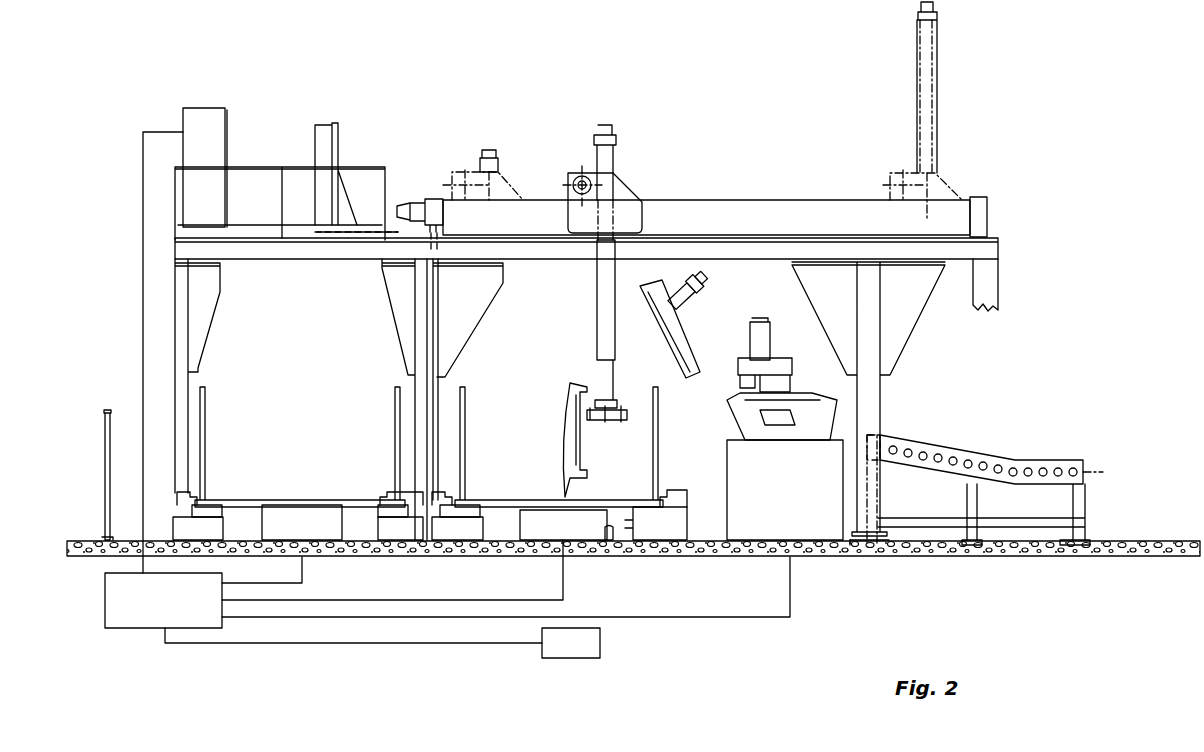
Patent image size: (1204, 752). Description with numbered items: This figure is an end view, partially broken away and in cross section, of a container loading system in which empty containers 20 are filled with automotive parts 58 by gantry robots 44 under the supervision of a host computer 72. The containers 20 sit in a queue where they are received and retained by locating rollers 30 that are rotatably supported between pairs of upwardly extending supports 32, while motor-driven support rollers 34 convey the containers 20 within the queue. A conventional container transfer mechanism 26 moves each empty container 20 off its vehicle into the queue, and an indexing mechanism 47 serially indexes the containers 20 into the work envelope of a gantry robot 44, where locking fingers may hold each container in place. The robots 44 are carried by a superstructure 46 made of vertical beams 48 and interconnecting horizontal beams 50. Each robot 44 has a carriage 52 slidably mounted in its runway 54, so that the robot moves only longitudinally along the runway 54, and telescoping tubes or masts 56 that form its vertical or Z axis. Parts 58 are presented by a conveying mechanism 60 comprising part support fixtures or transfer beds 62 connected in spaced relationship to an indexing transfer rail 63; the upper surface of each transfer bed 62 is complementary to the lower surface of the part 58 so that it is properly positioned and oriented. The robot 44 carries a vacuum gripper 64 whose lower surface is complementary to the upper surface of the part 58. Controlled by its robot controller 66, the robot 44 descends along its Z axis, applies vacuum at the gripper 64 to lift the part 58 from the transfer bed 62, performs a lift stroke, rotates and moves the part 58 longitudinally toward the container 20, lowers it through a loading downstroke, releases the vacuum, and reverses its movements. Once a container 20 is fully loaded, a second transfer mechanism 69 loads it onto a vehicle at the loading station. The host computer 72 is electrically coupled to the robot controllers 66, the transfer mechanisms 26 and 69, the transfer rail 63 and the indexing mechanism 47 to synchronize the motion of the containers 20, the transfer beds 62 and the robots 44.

The container 20 is at (207, 408).
The container transfer mechanism 26 is at (345, 525).
The locating roller 30 is at (195, 495).
The upwardly extending support 32 is at (180, 507).
The support roller 34 is at (217, 505).
The gantry robot 44 is at (500, 157).
The superstructure 46 is at (970, 353).
The indexing mechanism 47 is at (600, 652).
The vertical beam 48 is at (185, 387).
The horizontal beam 50 is at (1000, 261).
The carriage 52 is at (507, 178).
The runway 54 is at (742, 200).
The telescoping mast 56 is at (498, 164).
The automotive part 58 is at (668, 328).
The conveying mechanism 60 is at (845, 492).
The transfer bed 62 is at (735, 428).
The transfer rail 63 is at (851, 543).
The gripper 64 is at (683, 305).
The robot controller 66 is at (212, 107).
The second transfer mechanism 69 is at (608, 530).
The host computer 72 is at (130, 628).